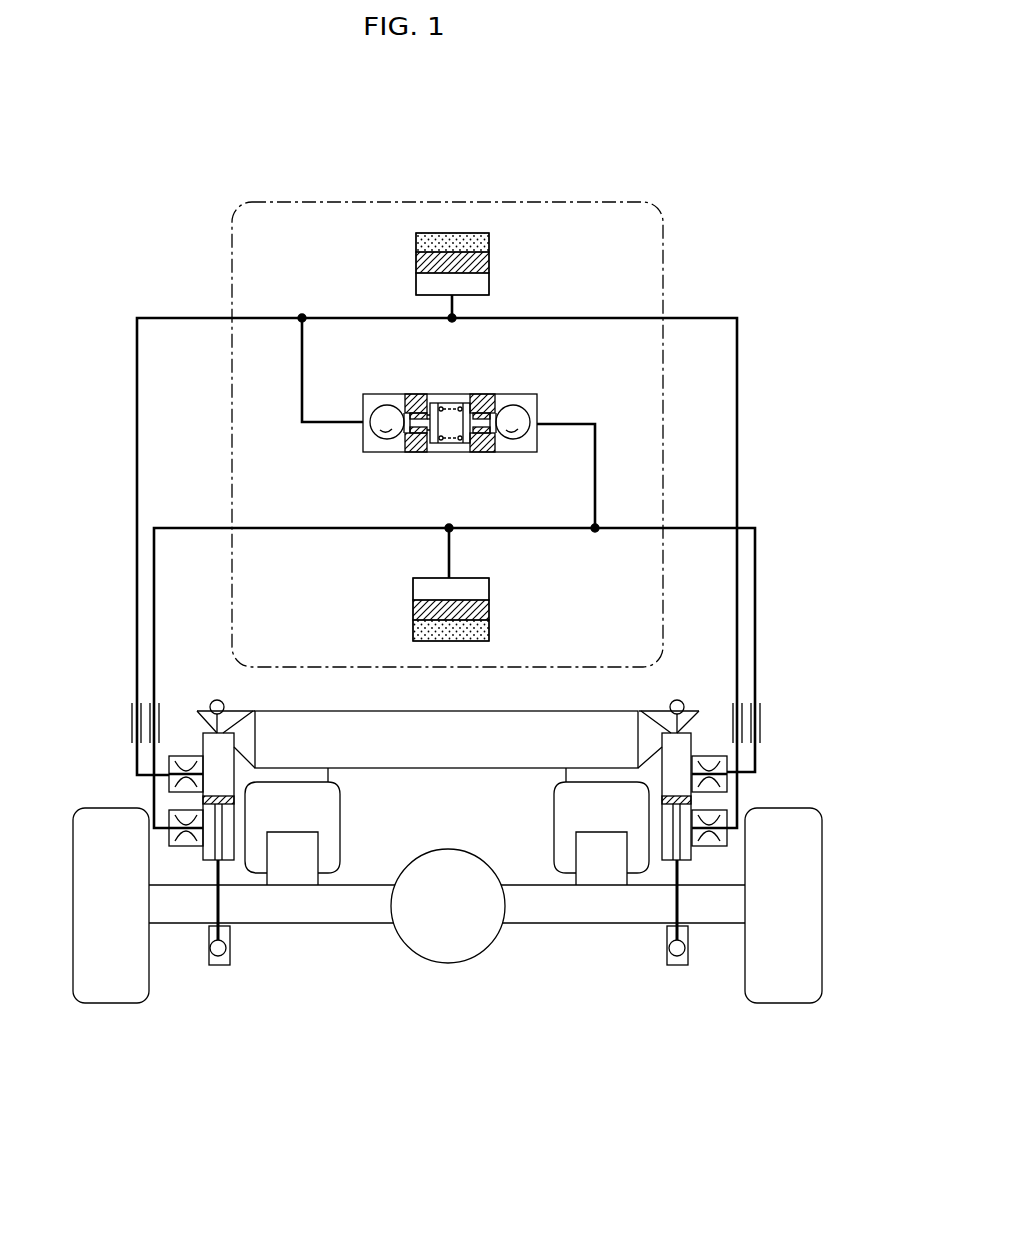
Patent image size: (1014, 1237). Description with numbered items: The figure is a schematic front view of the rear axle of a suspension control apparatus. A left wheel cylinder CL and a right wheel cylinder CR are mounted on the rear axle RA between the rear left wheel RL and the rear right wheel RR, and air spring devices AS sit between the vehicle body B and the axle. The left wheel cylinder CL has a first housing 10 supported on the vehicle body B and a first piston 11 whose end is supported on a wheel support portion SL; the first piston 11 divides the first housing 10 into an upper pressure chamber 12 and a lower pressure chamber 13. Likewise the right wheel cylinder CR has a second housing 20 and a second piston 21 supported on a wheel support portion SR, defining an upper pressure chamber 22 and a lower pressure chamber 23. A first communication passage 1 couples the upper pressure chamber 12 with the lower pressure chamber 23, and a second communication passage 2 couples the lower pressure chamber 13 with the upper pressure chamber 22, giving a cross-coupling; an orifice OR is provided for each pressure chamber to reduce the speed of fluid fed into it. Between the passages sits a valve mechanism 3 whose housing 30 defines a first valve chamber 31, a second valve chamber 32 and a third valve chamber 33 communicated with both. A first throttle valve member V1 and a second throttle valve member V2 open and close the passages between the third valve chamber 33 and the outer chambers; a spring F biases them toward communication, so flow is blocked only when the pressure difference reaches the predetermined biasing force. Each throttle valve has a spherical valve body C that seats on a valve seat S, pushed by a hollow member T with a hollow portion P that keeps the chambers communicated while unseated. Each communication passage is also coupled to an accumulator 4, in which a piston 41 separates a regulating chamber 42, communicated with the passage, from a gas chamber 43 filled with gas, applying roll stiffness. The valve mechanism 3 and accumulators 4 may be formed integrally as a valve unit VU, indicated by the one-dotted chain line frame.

The first communication passage 1 is at (738, 404).
The second communication passage 2 is at (757, 602).
The valve mechanism 3 is at (450, 421).
The accumulator 4 is at (450, 431).
The first housing 10 is at (190, 782).
The first piston 11 is at (200, 800).
The pressure chamber 12 is at (210, 746).
The pressure chamber 13 is at (210, 856).
The second housing 20 is at (700, 781).
The second piston 21 is at (697, 803).
The pressure chamber 22 is at (680, 758).
The pressure chamber 23 is at (684, 848).
The housing 30 is at (519, 395).
The first valve chamber 31 is at (382, 446).
The second valve chamber 32 is at (518, 446).
The third valve chamber 33 is at (450, 448).
The piston 41 is at (418, 263).
The regulating chamber 42 is at (424, 288).
The gas chamber 43 is at (418, 244).
The valve unit VU is at (663, 286).
The first throttle valve member V1 is at (410, 392).
The second throttle valve member V2 is at (481, 392).
The spring F is at (440, 405).
The valve seat S is at (400, 405).
The spherical valve body C is at (377, 430).
The hollow member T is at (412, 445).
The hollow portion P is at (431, 444).
The vehicle body B is at (420, 751).
The air spring device AS is at (341, 807).
The orifice OR is at (729, 763).
The rear axle RA is at (368, 915).
The rear left wheel RL is at (99, 988).
The rear right wheel RR is at (805, 968).
The wheel support portion SL is at (229, 963).
The wheel support portion SR is at (668, 963).
The left wheel cylinder CL is at (213, 876).
The right wheel cylinder CR is at (686, 874).